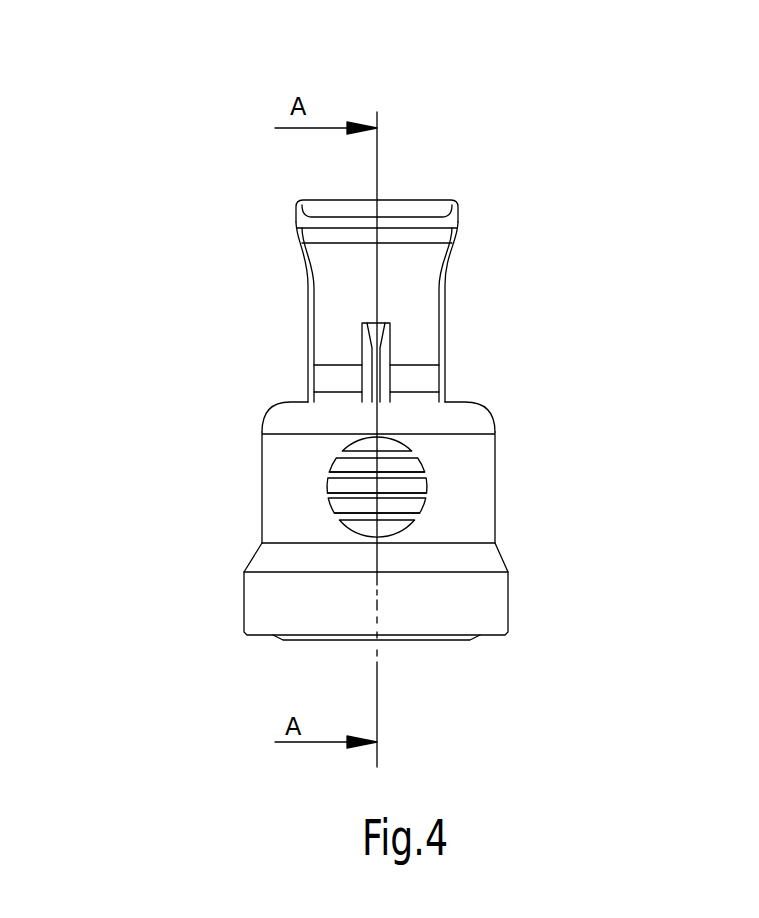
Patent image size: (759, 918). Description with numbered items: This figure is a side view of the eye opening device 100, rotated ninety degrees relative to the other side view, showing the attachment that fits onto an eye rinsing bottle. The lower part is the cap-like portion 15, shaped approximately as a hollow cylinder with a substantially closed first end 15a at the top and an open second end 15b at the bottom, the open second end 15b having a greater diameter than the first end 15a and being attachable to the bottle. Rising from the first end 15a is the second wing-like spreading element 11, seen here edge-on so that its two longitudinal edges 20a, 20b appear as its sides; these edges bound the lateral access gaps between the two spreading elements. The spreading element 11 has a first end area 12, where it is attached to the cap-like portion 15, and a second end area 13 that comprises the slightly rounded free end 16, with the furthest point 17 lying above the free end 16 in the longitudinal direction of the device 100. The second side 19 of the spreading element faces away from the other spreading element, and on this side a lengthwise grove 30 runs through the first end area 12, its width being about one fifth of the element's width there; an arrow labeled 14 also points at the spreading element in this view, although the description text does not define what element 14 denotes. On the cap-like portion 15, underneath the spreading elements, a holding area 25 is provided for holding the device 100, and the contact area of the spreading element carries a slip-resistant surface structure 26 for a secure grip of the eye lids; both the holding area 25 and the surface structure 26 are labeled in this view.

The eye opening device 100 is at (190, 672).
The second wing-like spreading element 11 is at (460, 153).
The first end area 12 is at (264, 385).
The second end area 13 is at (480, 207).
The spout 14 is at (462, 285).
The cap-like portion 15 is at (228, 498).
The first substantially closed end 15a is at (490, 394).
The second open end 15b is at (526, 650).
The free end 16 is at (330, 228).
The furthest point 17 is at (300, 200).
The second side 19 is at (352, 283).
The longitudinal edge 20a is at (443, 328).
The longitudinal edge 20b is at (313, 330).
The holding area 25 is at (430, 487).
The slip-resistant surface structure 26 is at (428, 502).
The lengthwise grove 30 is at (377, 372).